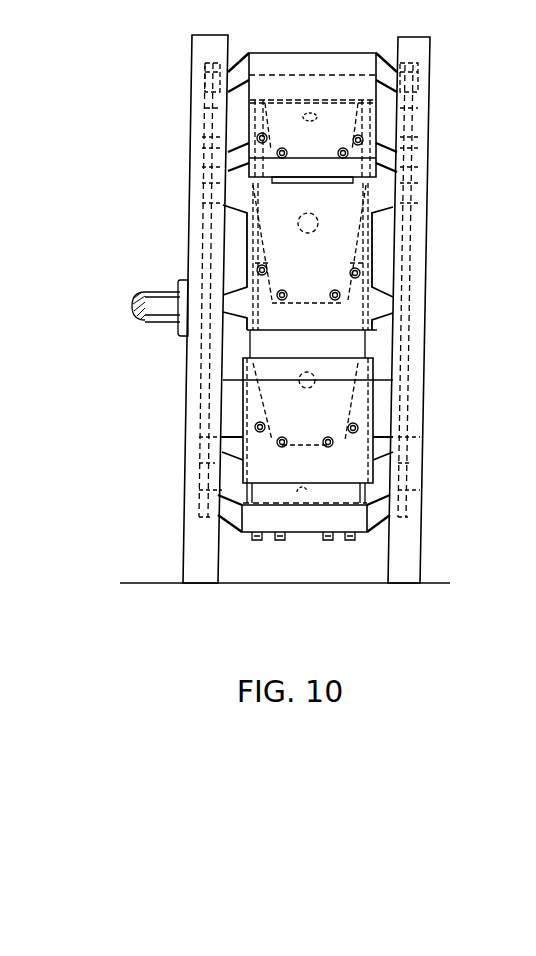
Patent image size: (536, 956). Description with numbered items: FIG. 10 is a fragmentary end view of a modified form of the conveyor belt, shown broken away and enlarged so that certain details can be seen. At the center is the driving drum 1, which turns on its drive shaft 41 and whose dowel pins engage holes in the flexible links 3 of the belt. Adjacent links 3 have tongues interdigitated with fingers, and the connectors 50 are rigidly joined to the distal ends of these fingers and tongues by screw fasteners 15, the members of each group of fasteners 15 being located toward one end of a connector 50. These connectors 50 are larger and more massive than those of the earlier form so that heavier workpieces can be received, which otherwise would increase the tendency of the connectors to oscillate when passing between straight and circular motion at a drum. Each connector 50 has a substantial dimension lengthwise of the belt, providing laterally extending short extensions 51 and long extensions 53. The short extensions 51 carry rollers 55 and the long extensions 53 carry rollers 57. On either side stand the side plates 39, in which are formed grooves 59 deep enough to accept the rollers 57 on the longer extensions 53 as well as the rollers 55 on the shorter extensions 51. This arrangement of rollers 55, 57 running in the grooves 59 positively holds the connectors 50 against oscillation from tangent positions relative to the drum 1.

The driving drum 1 is at (248, 338).
The flexible link 3 is at (314, 352).
The screw fastener 15 is at (345, 152).
The side plate 39 is at (192, 168).
The drive shaft 41 is at (158, 290).
The connector 50 is at (312, 96).
The short extension 51 is at (238, 163).
The long extension 53 is at (237, 62).
The roller 55 is at (220, 142).
The roller 57 is at (203, 73).
The groove 59 is at (195, 400).